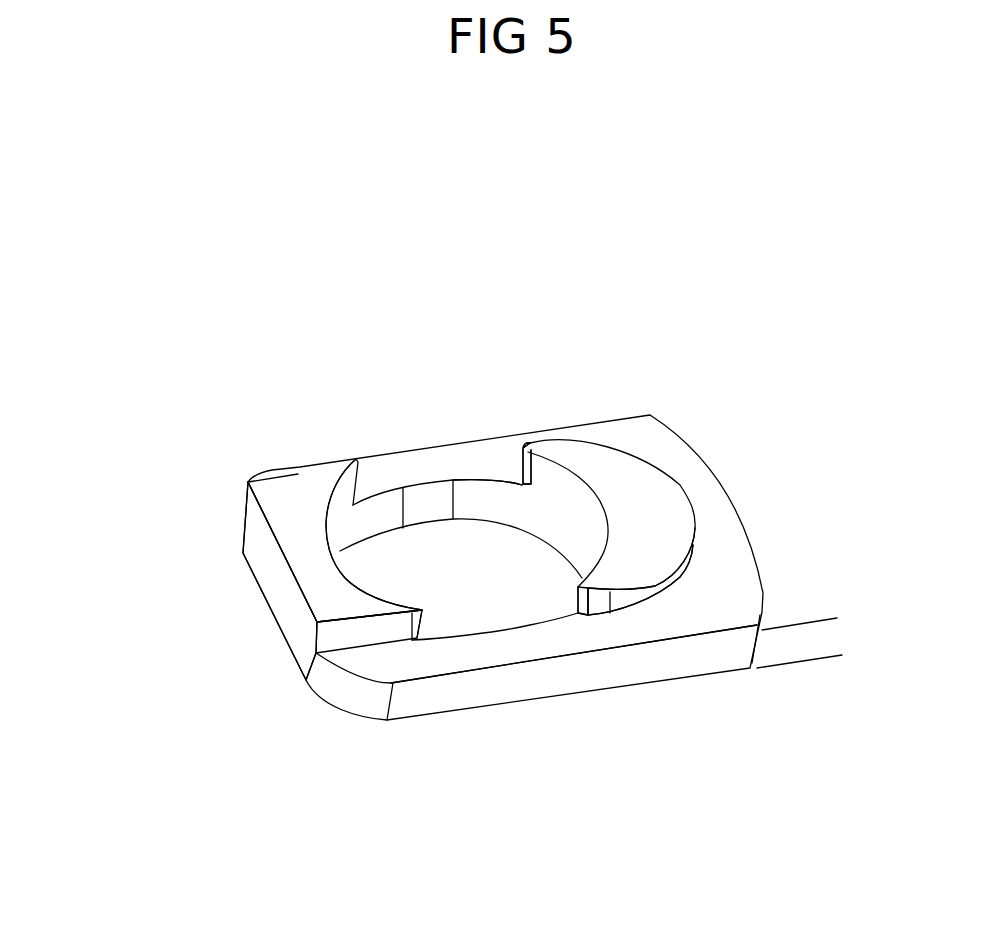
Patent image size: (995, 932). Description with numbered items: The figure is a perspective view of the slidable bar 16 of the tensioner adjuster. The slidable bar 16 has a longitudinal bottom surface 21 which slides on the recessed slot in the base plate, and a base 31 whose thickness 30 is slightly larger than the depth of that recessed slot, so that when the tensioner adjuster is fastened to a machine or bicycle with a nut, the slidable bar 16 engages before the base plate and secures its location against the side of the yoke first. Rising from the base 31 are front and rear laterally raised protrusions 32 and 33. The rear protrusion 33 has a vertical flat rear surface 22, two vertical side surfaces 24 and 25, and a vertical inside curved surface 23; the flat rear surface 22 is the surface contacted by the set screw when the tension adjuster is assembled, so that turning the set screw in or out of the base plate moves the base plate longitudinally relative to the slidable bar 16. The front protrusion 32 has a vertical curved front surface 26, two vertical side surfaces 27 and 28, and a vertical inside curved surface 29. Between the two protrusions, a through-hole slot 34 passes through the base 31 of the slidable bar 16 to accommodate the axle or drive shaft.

The slidable bar 16 is at (347, 198).
The longitudinal bottom surface 21 is at (427, 718).
The vertical flat rear surface 22 is at (282, 592).
The vertical inside curved surface 23 is at (342, 503).
The vertical side surface 24 is at (363, 635).
The vertical side surface 25 is at (290, 472).
The vertical curved front surface 26 is at (677, 570).
The vertical side surface 27 is at (600, 598).
The vertical side surface 28 is at (547, 435).
The vertical inside curved surface 29 is at (545, 490).
The thickness 30 is at (820, 622).
The base 31 is at (654, 664).
The front protrusion 32 is at (645, 492).
The rear protrusion 33 is at (298, 502).
The through-hole slot 34 is at (482, 568).